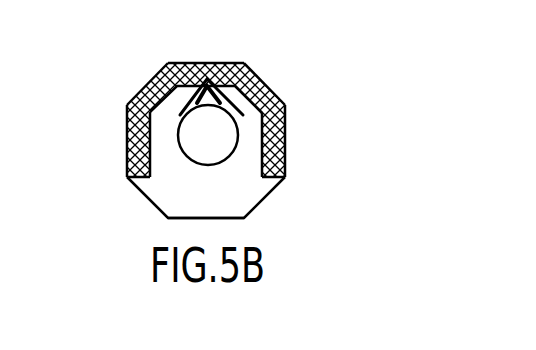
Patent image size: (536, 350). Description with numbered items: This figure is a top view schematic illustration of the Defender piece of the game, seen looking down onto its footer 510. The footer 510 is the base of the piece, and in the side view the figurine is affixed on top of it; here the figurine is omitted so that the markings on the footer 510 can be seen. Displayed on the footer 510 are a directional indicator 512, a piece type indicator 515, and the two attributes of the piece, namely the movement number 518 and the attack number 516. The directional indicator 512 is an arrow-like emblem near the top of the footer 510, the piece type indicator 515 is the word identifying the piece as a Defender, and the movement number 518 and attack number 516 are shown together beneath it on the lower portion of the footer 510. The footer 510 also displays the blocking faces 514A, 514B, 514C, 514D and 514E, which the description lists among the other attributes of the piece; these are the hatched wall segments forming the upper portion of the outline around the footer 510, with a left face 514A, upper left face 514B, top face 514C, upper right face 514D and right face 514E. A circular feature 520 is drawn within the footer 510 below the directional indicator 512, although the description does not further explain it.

The footer 510 is at (136, 186).
The directional indicator 512 is at (198, 97).
The blocking face 514A is at (127, 137).
The blocking face 514B is at (142, 88).
The blocking face 514C is at (193, 66).
The blocking face 514D is at (247, 83).
The right side wall segment 514E is at (286, 143).
The piece type indicator 515 is at (258, 184).
The attack number 516 is at (220, 207).
The movement number 518 is at (190, 206).
The circular indicator 520 is at (210, 137).